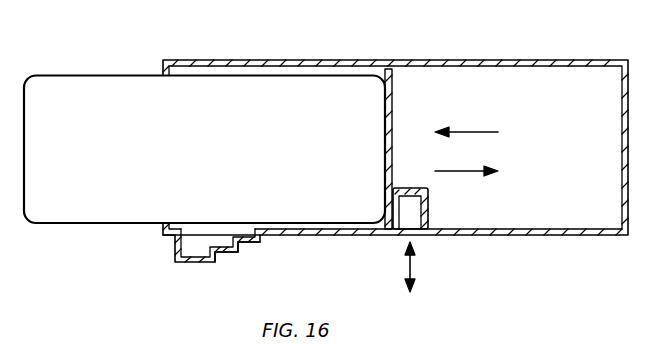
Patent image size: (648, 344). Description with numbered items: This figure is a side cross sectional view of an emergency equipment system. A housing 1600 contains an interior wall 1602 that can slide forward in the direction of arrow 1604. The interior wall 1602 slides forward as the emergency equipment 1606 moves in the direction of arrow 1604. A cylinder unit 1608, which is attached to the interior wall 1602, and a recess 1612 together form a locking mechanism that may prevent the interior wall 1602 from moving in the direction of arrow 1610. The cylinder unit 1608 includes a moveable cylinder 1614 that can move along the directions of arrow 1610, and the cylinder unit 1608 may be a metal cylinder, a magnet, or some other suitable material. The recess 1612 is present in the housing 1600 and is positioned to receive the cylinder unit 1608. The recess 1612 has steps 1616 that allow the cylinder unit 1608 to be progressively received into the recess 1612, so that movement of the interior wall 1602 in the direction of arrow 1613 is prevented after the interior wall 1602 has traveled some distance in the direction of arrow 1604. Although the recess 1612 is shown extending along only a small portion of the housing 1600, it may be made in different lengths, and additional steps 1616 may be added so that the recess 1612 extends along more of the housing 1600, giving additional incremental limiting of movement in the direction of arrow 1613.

The housing 1600 is at (502, 60).
The interior wall 1602 is at (394, 108).
The arrow 1604 is at (483, 132).
The emergency equipment 1606 is at (234, 160).
The cylinder unit 1608 is at (428, 205).
The arrow 1610 is at (407, 268).
The recess 1612 is at (238, 250).
The arrow 1613 is at (477, 171).
The moveable cylinder 1614 is at (413, 222).
The steps 1616 is at (192, 263).